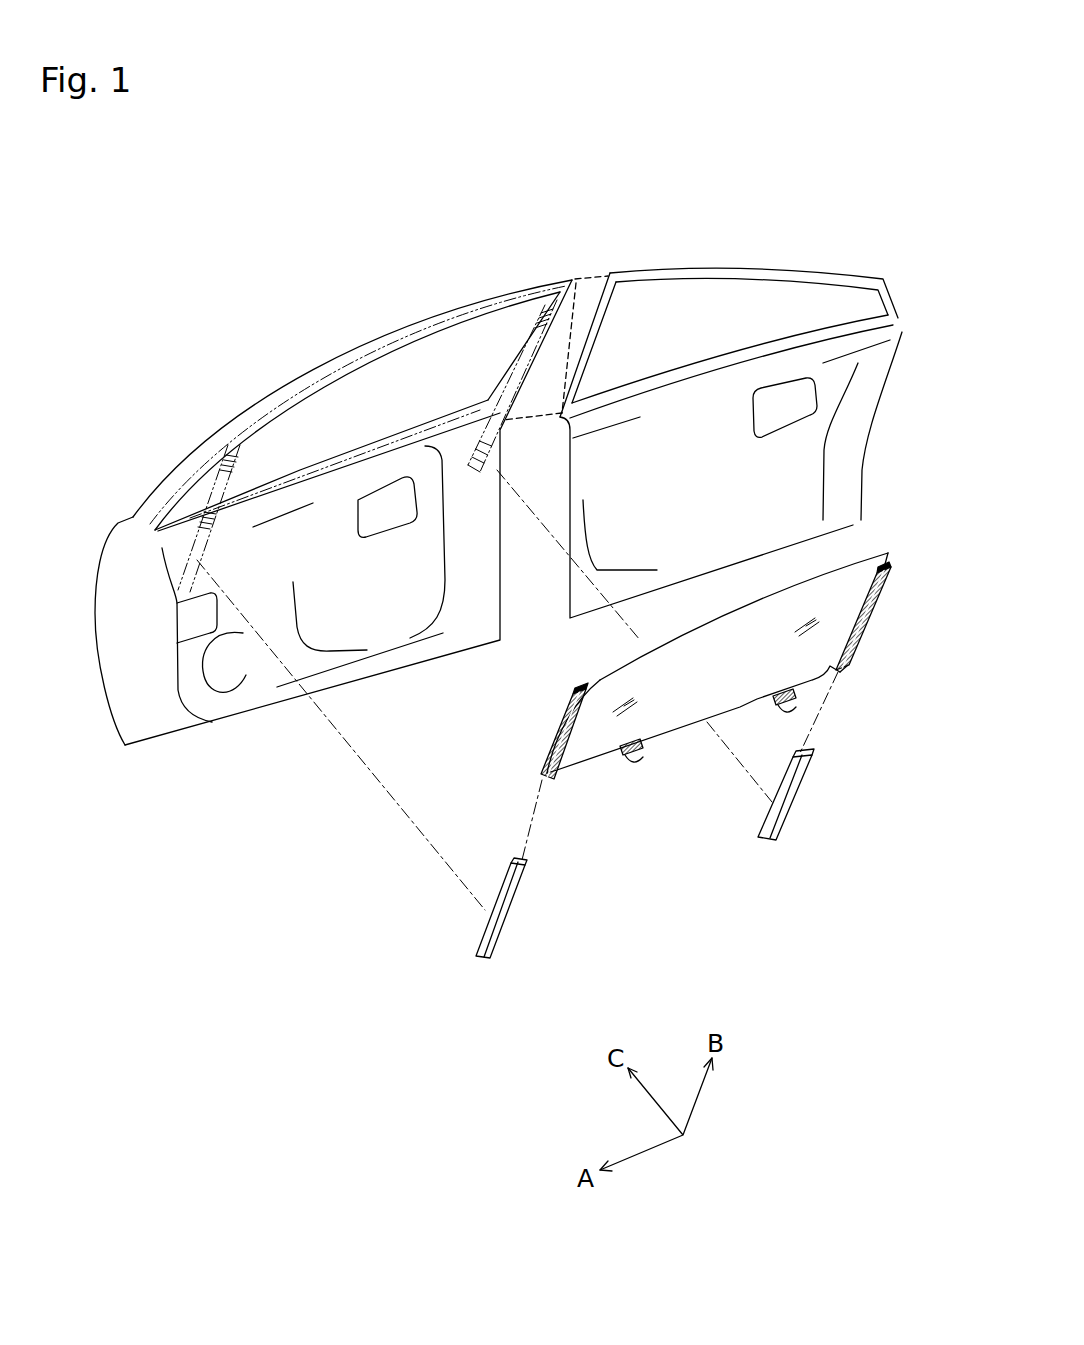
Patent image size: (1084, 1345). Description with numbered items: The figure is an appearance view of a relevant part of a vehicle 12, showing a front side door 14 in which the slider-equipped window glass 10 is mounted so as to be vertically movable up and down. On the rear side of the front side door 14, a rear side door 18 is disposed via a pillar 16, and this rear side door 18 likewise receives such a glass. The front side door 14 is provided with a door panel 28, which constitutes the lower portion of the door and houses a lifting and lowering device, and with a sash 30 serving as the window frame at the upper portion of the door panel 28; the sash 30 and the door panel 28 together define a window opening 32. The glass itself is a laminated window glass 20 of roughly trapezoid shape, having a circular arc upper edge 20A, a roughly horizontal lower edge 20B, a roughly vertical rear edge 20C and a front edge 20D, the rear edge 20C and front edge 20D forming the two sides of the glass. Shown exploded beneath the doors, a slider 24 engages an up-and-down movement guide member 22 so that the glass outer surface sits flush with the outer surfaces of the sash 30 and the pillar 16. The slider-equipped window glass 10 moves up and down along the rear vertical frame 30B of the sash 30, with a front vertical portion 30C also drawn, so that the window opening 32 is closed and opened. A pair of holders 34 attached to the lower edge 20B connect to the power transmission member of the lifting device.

The slider-equipped window glass 10 is at (880, 548).
The vehicle 12 is at (770, 190).
The front side door 14 is at (222, 428).
The pillar 16 is at (592, 277).
The rear side door 18 is at (858, 270).
The window glass 20 is at (817, 683).
The upper edge 20A is at (745, 593).
The lower edge 20B is at (680, 727).
The rear edge 20C is at (890, 558).
The front edge 20D is at (608, 667).
The up-and-down movement guide member 22 is at (507, 917).
The slider 24 is at (565, 740).
The door panel 28 is at (381, 608).
The sash 30 is at (360, 352).
The rear vertical frame 30B is at (517, 350).
The front vertical portion of molding 30C is at (180, 490).
The window opening 32 is at (407, 409).
The holders 34 is at (650, 758).